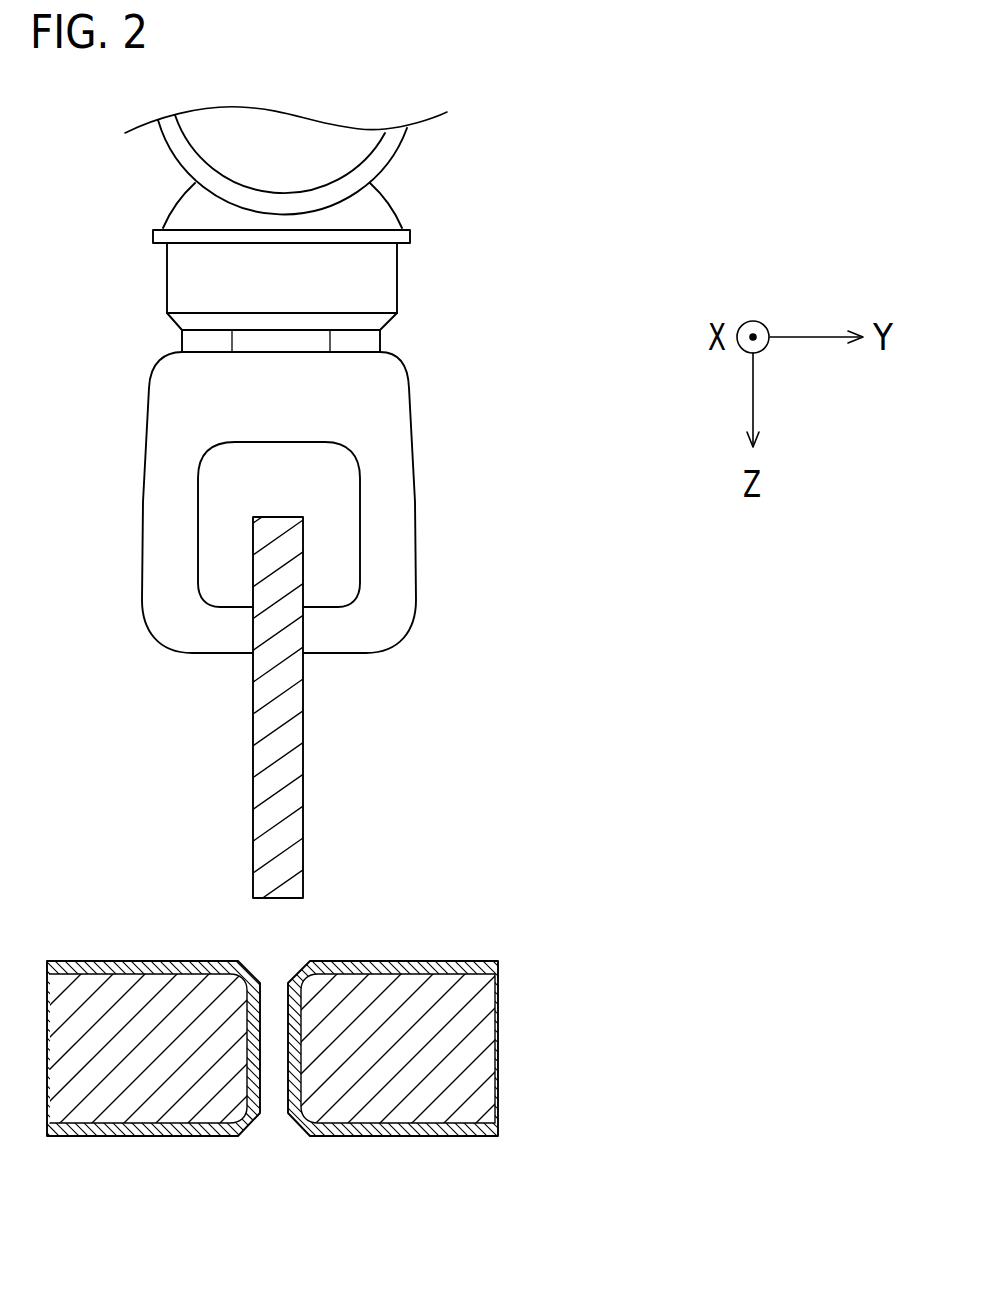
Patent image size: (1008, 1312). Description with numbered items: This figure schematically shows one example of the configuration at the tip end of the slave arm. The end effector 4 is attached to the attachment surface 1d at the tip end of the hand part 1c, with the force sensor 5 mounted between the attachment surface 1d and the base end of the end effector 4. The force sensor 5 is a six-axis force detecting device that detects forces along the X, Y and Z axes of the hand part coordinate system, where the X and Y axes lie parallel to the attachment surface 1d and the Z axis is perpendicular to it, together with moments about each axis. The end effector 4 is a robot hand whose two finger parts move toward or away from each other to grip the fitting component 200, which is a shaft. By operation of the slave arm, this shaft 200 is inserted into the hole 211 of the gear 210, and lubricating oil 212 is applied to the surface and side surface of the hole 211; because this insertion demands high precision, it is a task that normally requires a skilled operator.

The hand part 1c is at (432, 272).
The attachment surface 1d is at (298, 328).
The force sensor 5 is at (383, 346).
The end effector 4 is at (415, 495).
The fitting component 200 is at (303, 708).
The gear 210 is at (346, 987).
The hole 211 is at (275, 967).
The lubricating oil 212 is at (417, 965).